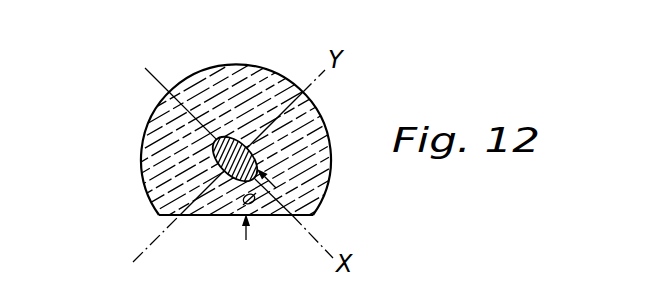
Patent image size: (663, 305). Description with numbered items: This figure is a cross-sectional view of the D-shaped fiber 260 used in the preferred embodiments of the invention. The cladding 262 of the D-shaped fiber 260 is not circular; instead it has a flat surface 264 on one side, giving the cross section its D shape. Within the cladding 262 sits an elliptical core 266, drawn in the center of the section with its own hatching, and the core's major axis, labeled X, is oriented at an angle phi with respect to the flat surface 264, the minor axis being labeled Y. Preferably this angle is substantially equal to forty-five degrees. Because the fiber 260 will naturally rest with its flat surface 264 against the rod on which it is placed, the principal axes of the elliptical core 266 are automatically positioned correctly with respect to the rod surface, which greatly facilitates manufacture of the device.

The D-shaped fiber 260 is at (248, 64).
The cladding 262 is at (312, 162).
The flat surface 264 is at (198, 217).
The elliptical core 266 is at (213, 152).